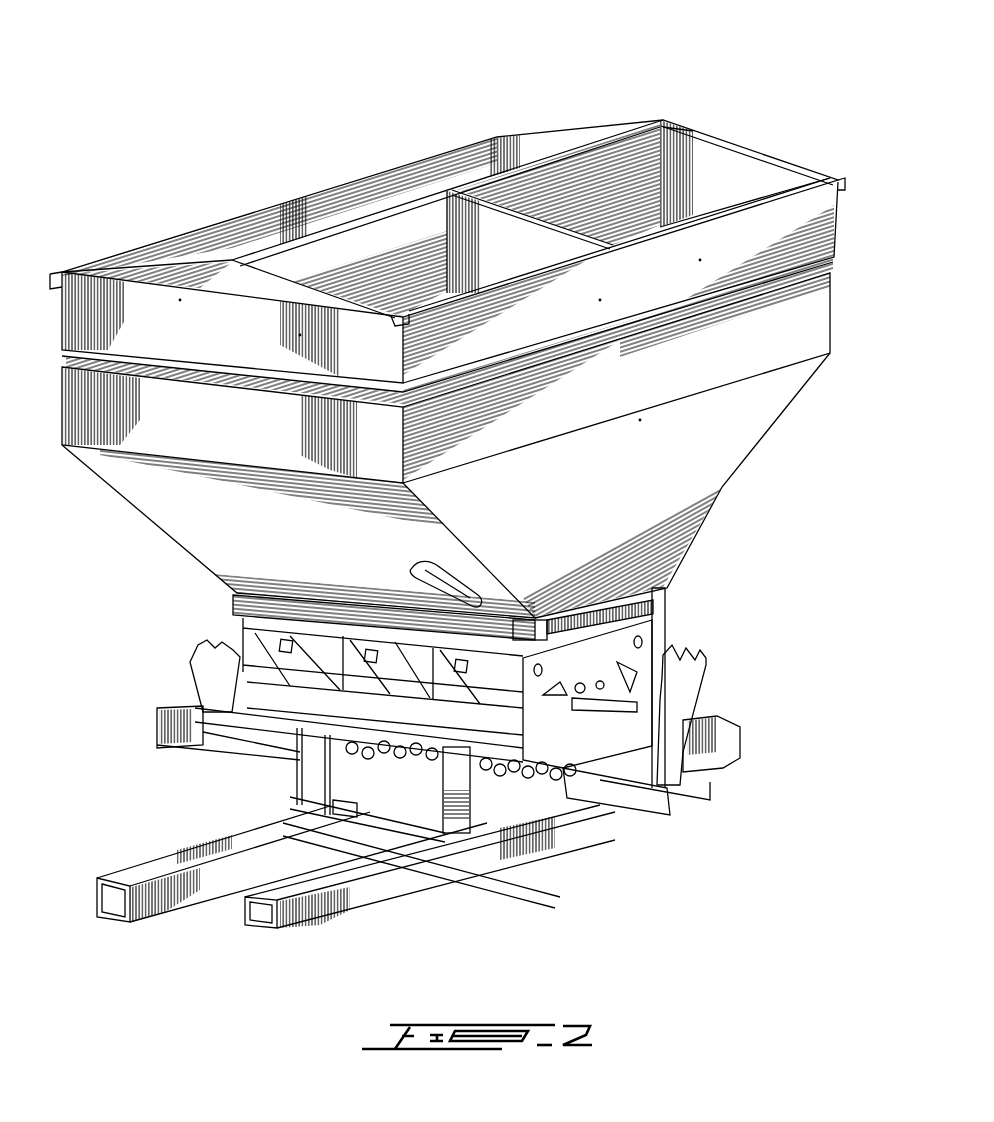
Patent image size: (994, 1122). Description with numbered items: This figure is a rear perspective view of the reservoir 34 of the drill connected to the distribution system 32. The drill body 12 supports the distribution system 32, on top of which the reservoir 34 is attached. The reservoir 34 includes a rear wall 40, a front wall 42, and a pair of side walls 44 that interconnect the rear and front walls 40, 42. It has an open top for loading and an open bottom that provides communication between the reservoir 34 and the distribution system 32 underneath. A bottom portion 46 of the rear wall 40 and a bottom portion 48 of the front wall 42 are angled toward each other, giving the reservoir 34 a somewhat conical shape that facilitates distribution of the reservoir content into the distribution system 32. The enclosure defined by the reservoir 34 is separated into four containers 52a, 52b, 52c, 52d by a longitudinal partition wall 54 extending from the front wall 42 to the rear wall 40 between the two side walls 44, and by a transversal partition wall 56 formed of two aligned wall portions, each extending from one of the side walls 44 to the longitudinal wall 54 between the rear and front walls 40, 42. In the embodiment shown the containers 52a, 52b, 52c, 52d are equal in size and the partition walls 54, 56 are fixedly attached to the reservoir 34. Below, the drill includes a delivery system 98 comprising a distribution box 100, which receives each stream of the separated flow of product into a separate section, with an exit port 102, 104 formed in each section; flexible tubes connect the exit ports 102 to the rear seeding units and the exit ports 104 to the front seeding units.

The drill body 12 is at (163, 893).
The distribution system 32 is at (675, 630).
The reservoir 34 is at (838, 214).
The rear wall 40 is at (137, 428).
The front wall 42 is at (709, 170).
The side walls 44 is at (382, 186).
The bottom portion of the rear wall 46 is at (193, 527).
The bottom portion of the front wall 48 is at (723, 447).
The container 52a is at (221, 248).
The container 52b is at (359, 260).
The container 52c is at (517, 148).
The container 52d is at (636, 181).
The longitudinal partition wall 54 is at (575, 146).
The transversal partition wall 56 is at (488, 206).
The delivery system 98 is at (570, 793).
The distribution box 100 is at (433, 762).
The exit port 102 is at (430, 758).
The exit port 104 is at (553, 778).